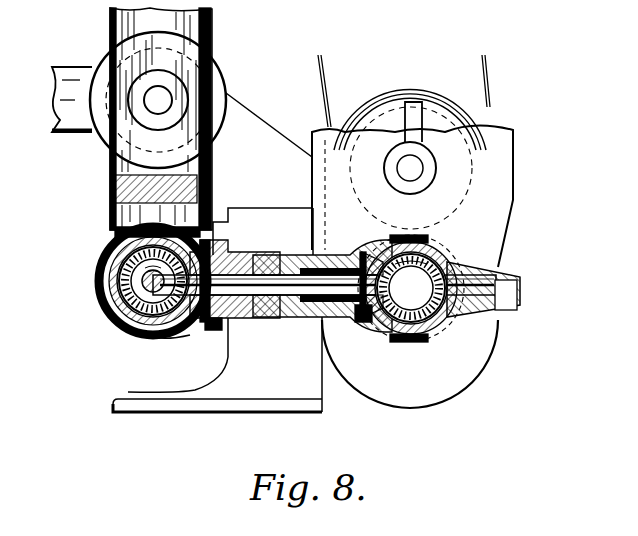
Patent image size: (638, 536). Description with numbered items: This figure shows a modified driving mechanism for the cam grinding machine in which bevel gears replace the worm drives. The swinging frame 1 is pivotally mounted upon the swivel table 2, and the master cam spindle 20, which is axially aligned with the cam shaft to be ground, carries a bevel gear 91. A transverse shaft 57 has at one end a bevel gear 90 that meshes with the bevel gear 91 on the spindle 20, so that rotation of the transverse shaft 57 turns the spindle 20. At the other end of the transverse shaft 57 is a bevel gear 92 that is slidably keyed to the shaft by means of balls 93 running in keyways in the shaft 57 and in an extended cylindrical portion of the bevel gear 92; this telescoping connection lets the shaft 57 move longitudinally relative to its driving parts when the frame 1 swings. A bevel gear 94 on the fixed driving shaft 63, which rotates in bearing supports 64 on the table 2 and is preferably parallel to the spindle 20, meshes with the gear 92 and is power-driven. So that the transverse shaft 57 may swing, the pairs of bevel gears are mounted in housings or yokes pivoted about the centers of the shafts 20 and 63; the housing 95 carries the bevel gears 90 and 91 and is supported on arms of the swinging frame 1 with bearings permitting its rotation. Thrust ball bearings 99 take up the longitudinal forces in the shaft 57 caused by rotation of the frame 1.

The swinging frame 1 is at (212, 30).
The swivel table 2 is at (190, 405).
The master cam spindle 20 is at (118, 326).
The transverse shaft 57 is at (291, 296).
The driving shaft 63 is at (416, 312).
The bearing supports 64 is at (473, 333).
The bevel gear 90 is at (183, 340).
The bevel gear 91 is at (98, 291).
The bevel gear 92 is at (377, 320).
The balls 93 is at (313, 268).
The bevel gear 94 is at (448, 322).
The housing 95 is at (218, 254).
The thrust ball bearings 99 is at (216, 318).